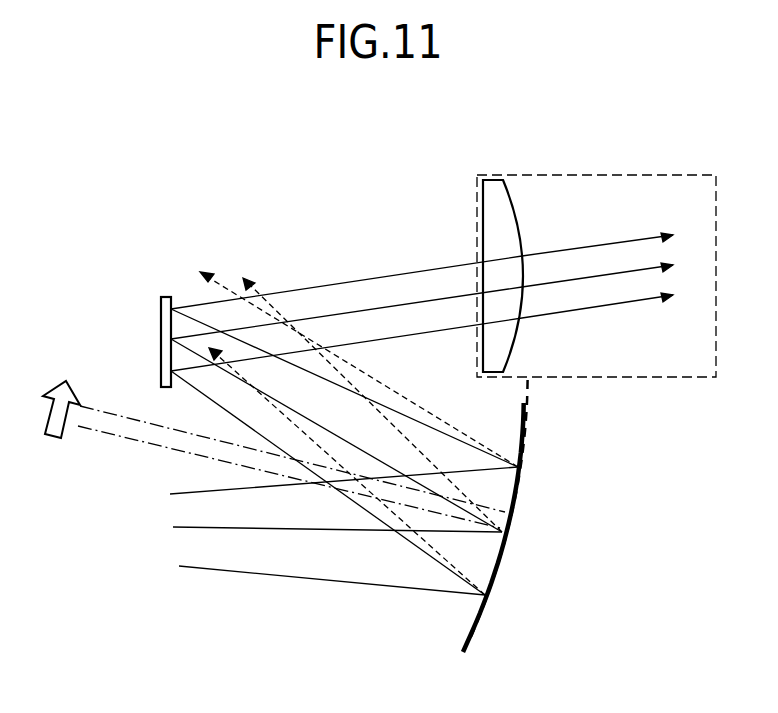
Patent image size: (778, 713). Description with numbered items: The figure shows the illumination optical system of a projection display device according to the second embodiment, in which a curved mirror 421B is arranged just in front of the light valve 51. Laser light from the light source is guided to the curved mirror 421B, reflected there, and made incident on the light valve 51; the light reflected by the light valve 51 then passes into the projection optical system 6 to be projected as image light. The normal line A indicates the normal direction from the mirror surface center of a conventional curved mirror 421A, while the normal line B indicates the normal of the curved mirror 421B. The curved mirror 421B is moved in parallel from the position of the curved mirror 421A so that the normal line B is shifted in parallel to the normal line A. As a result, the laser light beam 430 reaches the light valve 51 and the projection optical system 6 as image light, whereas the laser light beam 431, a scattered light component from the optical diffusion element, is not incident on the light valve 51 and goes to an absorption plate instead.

The light valve 51 is at (165, 297).
The laser light beam 430 is at (363, 280).
The laser light beam 431 is at (263, 292).
The projection optical system 6 is at (547, 175).
The conventional curved mirror 421A is at (508, 550).
The curved mirror 421B is at (528, 413).
The normal line A is at (85, 430).
The normal line B is at (91, 404).